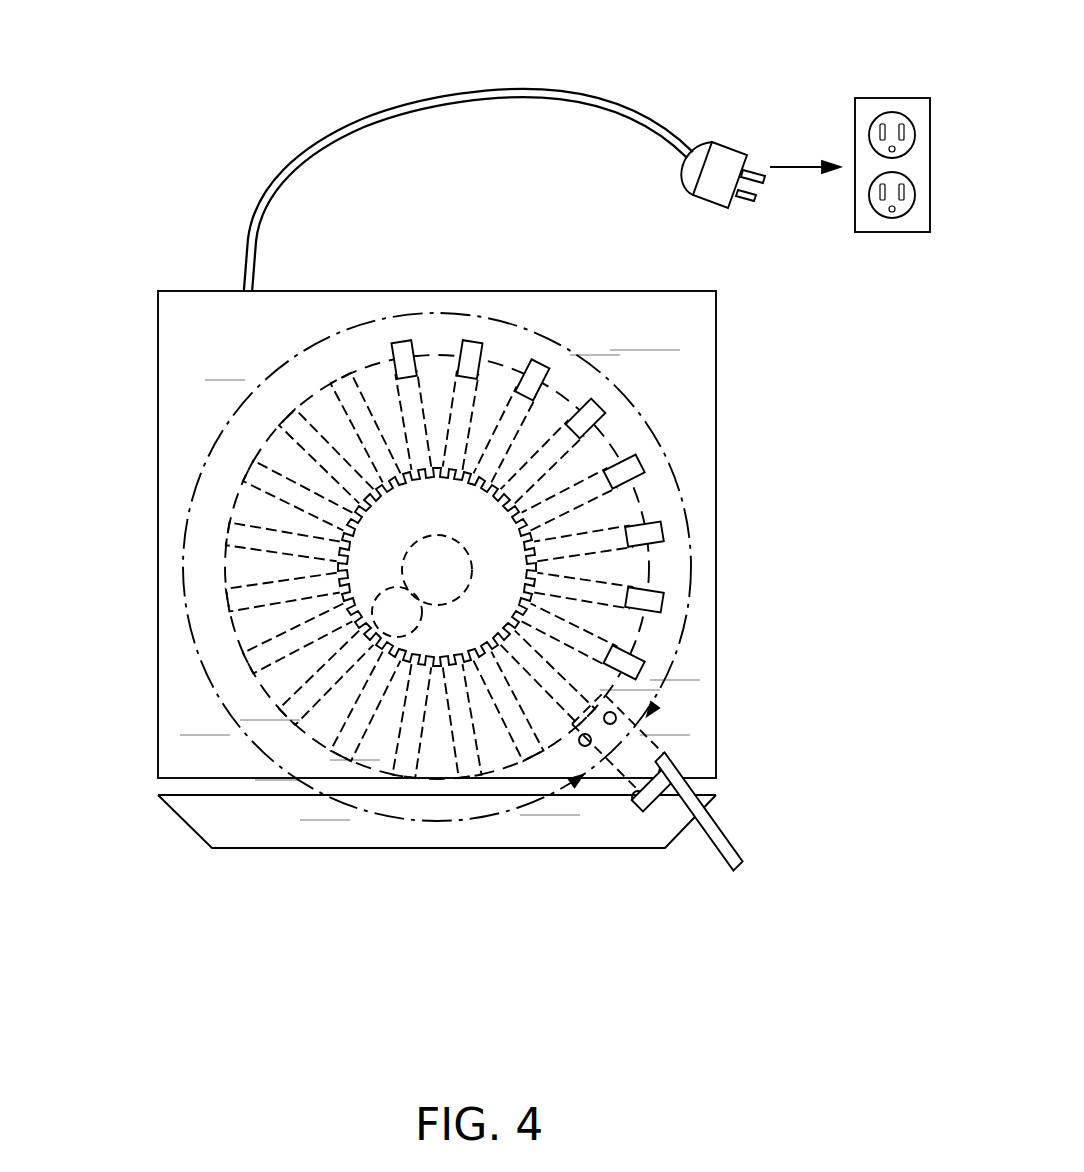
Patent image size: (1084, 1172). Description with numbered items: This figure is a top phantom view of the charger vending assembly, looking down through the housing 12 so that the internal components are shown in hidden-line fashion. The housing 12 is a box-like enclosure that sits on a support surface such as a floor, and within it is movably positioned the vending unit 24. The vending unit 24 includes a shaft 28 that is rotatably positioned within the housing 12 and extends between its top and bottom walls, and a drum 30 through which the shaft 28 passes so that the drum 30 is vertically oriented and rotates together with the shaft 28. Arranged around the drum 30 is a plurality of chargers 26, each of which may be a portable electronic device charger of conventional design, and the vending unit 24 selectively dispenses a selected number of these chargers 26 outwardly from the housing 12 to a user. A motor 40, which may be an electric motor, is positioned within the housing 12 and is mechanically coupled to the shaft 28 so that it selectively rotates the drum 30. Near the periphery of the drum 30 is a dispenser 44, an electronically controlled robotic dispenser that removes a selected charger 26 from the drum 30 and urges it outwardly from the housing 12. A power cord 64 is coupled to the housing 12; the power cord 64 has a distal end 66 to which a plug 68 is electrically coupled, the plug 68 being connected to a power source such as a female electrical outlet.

The housing 12 is at (560, 291).
The vending unit 24 is at (240, 380).
The chargers 26 is at (540, 368).
The shaft 28 is at (450, 603).
The drum 30 is at (233, 504).
The motor 40 is at (375, 603).
The dispenser 44 is at (660, 755).
The power cord 64 is at (478, 98).
The distal end 66 is at (683, 142).
The plug 68 is at (730, 142).